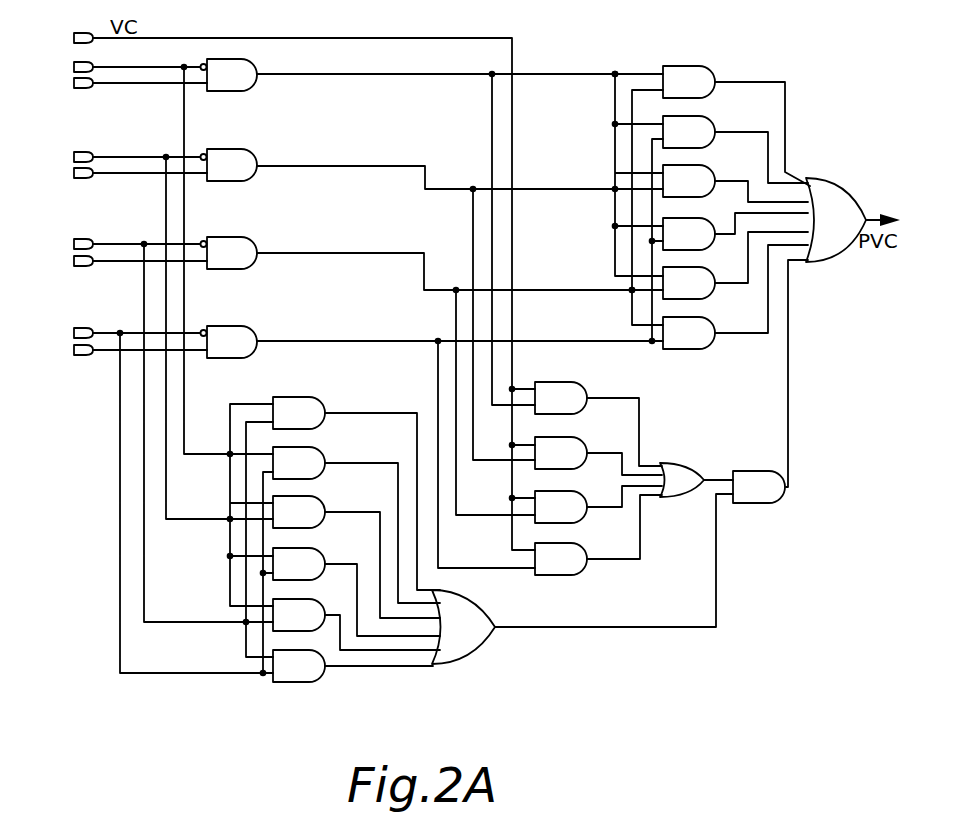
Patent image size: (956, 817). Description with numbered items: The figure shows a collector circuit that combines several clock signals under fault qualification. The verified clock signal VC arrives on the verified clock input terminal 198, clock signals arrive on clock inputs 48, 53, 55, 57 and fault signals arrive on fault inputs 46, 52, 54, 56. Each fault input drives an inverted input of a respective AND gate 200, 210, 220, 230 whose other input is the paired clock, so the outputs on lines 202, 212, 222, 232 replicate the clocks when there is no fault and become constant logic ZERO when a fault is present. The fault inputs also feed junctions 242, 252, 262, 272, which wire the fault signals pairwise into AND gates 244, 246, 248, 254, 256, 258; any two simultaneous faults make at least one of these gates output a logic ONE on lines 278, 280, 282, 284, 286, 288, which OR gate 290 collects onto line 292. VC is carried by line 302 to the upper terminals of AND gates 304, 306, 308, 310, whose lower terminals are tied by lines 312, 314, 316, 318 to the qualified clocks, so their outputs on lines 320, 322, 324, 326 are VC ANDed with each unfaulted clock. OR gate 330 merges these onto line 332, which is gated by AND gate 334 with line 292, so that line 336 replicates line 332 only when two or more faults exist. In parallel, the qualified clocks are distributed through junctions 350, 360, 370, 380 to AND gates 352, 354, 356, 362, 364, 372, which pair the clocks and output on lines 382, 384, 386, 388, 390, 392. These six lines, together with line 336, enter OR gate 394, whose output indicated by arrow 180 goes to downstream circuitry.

The verified clock input terminal 198 is at (74, 34).
The fault input 46 is at (74, 65).
The clock input 48 is at (74, 84).
The fault input 52 is at (74, 156).
The clock input 53 is at (74, 174).
The fault input 54 is at (74, 242).
The clock input 55 is at (74, 262).
The fault input 56 is at (74, 332).
The clock input 57 is at (74, 351).
The AND gate 200 is at (232, 75).
The line 202 is at (284, 76).
The AND gate 210 is at (232, 165).
The line 212 is at (324, 165).
The AND gate 220 is at (232, 253).
The line 222 is at (324, 252).
The AND gate 230 is at (232, 342).
The line 232 is at (334, 340).
The junction 242 is at (230, 456).
The AND gate 244 is at (299, 413).
The AND gate 246 is at (299, 463).
The AND gate 248 is at (299, 512).
The junction 252 is at (230, 520).
The AND gate 254 is at (299, 564).
The AND gate 256 is at (299, 615).
The AND gate 258 is at (299, 666).
The junction 262 is at (246, 624).
The junction 272 is at (263, 677).
The output line 278 is at (376, 412).
The output line 280 is at (356, 463).
The output line 282 is at (350, 512).
The output line 284 is at (336, 564).
The output line 286 is at (332, 615).
The output line 288 is at (340, 666).
The OR gate 290 is at (463, 627).
The line 292 is at (540, 628).
The line 302 is at (398, 38).
The AND gate 304 is at (561, 398).
The AND gate 306 is at (561, 453).
The AND gate 308 is at (561, 507).
The AND gate 310 is at (561, 559).
The line 312 is at (492, 106).
The line 314 is at (473, 226).
The line 316 is at (456, 310).
The line 318 is at (438, 360).
The line 320 is at (602, 397).
The line 322 is at (603, 452).
The line 324 is at (602, 509).
The line 326 is at (608, 560).
The OR gate 330 is at (682, 480).
The line 332 is at (720, 478).
The AND gate 334 is at (759, 487).
The line 336 is at (789, 406).
The junction 350 is at (616, 72).
The AND gate 352 is at (689, 82).
The AND gate 354 is at (689, 132).
The AND gate 356 is at (689, 181).
The junction 360 is at (614, 183).
The AND gate 362 is at (689, 234).
The AND gate 364 is at (689, 283).
The junction 370 is at (632, 292).
The AND gate 372 is at (689, 333).
The junction 380 is at (652, 343).
The line 382 is at (752, 83).
The line 384 is at (745, 132).
The line 386 is at (735, 180).
The line 388 is at (720, 232).
The line 390 is at (722, 283).
The line 392 is at (735, 333).
The OR gate 394 is at (836, 220).
The arrow 180 is at (867, 217).